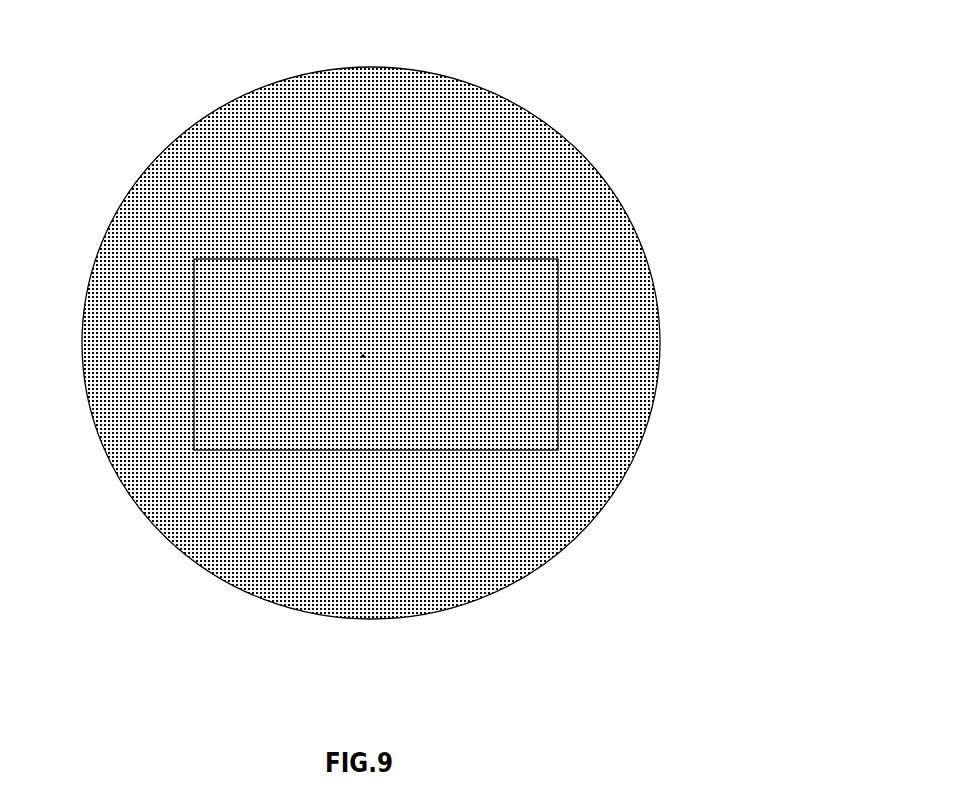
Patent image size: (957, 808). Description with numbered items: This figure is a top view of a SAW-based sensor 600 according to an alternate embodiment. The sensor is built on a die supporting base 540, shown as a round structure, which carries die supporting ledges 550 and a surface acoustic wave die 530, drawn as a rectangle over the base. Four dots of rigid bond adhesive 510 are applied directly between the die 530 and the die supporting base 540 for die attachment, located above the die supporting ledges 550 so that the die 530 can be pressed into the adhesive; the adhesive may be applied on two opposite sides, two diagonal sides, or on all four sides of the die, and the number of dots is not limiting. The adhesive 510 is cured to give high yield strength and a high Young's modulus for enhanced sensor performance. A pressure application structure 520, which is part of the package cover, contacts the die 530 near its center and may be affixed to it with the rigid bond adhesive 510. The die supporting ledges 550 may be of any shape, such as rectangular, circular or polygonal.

The rigid bond adhesive 510 is at (287, 318).
The pressure application structure 520 is at (363, 355).
The surface acoustic wave die 530 is at (248, 437).
The die supporting base 540 is at (543, 522).
The die supporting ledges 550 is at (287, 300).
The SAW-based sensor 600 is at (437, 333).